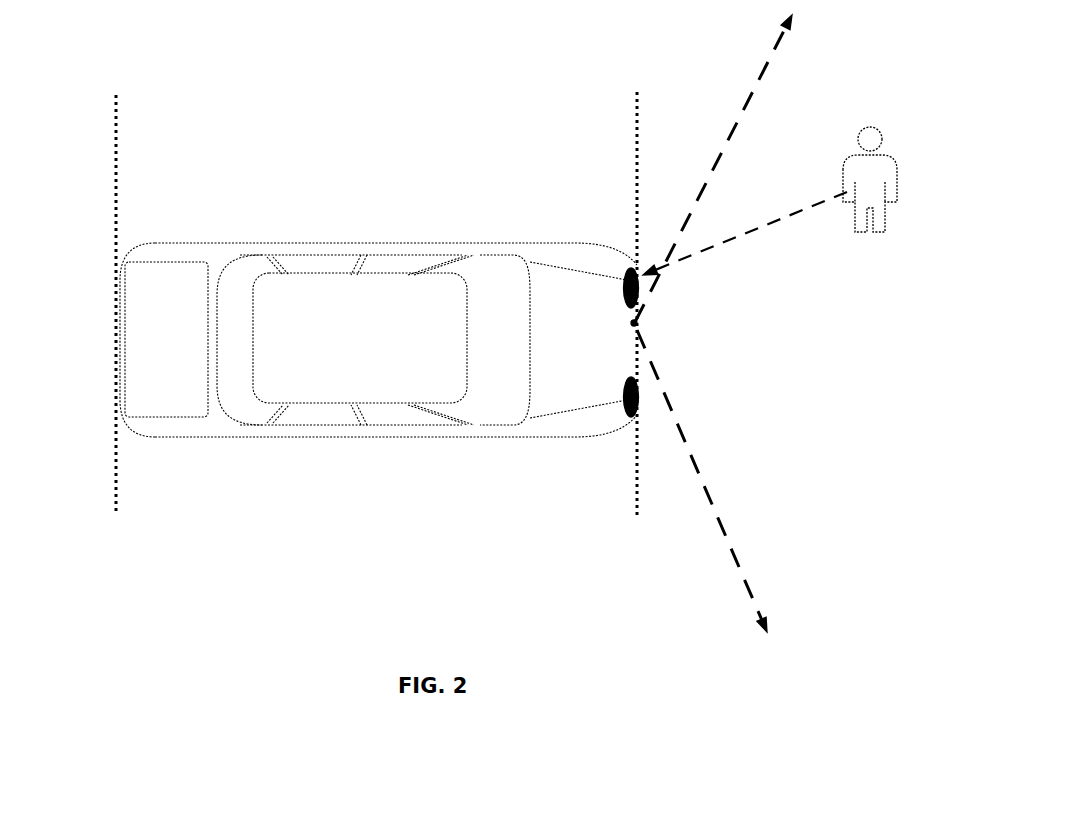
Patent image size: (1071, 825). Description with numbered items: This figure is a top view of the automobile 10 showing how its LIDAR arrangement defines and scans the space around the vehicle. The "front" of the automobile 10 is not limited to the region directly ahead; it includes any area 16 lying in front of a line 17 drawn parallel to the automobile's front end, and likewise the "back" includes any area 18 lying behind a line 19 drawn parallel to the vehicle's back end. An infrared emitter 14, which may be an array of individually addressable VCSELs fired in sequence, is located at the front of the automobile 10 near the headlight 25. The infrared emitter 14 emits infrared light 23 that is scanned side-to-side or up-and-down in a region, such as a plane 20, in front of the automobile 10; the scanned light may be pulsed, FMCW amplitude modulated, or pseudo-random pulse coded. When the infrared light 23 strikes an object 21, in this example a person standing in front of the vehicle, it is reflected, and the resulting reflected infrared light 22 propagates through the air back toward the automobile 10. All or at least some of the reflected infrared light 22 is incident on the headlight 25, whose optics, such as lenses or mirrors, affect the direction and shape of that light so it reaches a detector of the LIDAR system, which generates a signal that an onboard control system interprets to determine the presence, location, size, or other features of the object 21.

The automobile 10 is at (342, 90).
The infrared emitter 14 is at (632, 322).
The area 16 is at (682, 107).
The line 17 is at (635, 134).
The area 18 is at (60, 329).
The line 19 is at (112, 137).
The plane 20 is at (712, 334).
The object 21 is at (888, 163).
The reflected infrared light 22 is at (768, 232).
The infrared light 23 is at (752, 92).
The headlight 25 is at (624, 294).